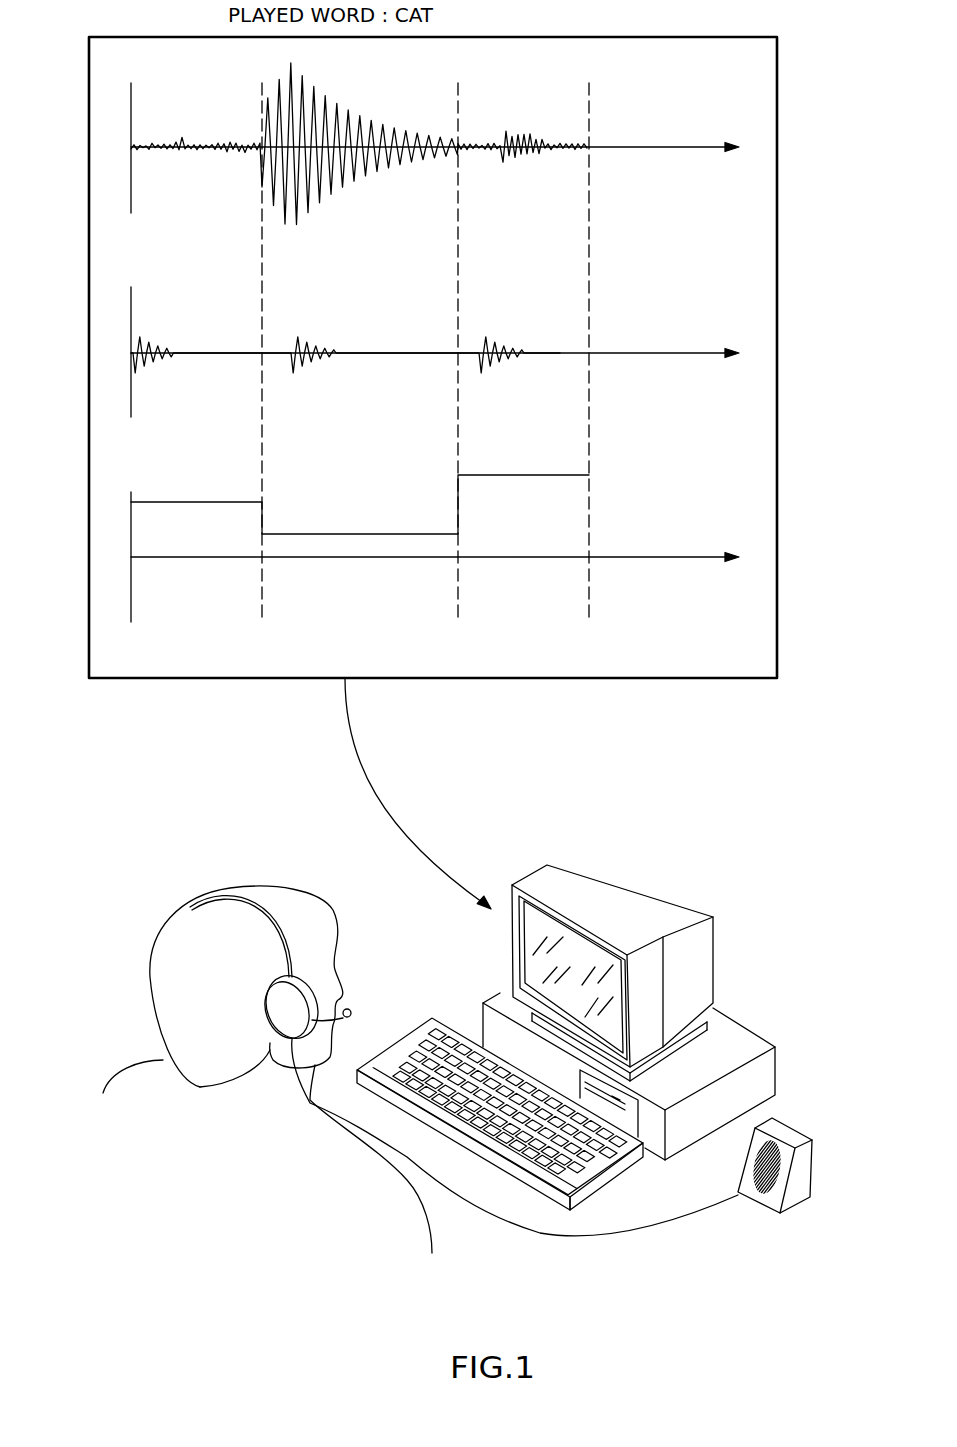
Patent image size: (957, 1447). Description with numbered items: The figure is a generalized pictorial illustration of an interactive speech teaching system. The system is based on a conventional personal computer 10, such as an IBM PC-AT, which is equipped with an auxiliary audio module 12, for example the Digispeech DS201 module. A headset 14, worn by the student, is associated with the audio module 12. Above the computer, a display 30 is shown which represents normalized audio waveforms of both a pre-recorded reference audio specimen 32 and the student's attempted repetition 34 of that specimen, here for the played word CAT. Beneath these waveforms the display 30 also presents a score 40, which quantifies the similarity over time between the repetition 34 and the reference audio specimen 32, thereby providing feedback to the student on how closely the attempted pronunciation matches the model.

The personal computer 10 is at (685, 962).
The auxiliary audio module 12 is at (803, 1175).
The headset 14 is at (248, 893).
The display 30 is at (479, 473).
The pre-recorded reference audio specimen 32 is at (695, 147).
The student's attempted repetition 34 is at (688, 355).
The score 40 is at (690, 560).